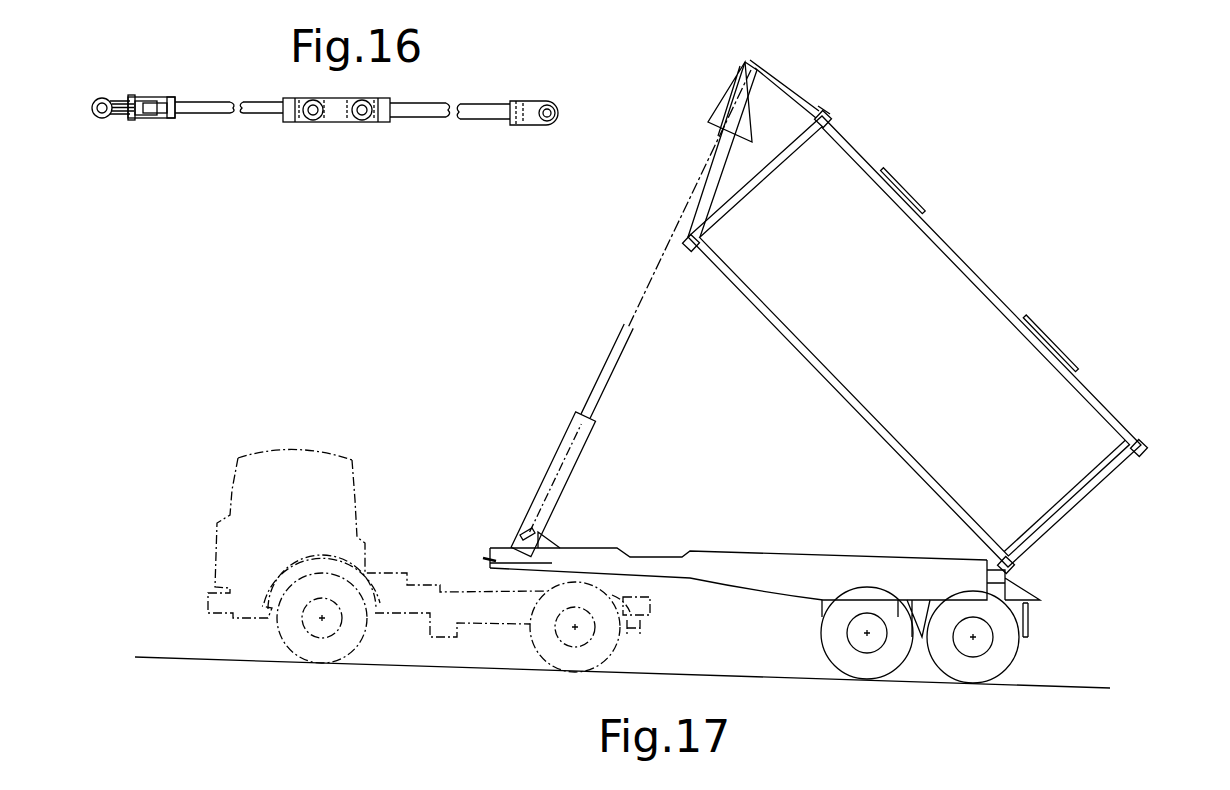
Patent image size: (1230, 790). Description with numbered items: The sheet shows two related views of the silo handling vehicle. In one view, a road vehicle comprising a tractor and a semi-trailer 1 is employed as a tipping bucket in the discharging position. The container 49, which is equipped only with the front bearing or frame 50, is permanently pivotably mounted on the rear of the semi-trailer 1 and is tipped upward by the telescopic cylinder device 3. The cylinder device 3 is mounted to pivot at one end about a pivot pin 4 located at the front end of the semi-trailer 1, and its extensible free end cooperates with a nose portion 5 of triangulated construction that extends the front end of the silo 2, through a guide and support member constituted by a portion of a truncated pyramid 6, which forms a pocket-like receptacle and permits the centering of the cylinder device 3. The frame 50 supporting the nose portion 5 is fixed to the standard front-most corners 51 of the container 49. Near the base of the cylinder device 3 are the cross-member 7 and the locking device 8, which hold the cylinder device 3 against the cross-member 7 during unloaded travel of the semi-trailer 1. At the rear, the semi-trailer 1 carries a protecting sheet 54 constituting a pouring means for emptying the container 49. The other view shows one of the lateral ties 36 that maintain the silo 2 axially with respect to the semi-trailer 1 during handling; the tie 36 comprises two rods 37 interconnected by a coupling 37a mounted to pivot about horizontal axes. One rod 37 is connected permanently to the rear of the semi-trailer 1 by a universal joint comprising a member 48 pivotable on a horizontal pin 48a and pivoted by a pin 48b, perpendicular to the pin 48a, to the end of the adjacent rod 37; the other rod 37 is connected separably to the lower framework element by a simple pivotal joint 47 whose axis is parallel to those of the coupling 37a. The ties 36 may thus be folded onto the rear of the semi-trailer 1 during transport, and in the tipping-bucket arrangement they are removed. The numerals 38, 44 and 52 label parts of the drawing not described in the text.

In FIG. 17, the semi-trailer 1 is at (765, 583).
In FIG. 17, the silo 2 is at (943, 278).
In FIG. 17, the telescopic cylinder device 3 is at (540, 497).
In FIG. 17, the pivot pin 4 is at (513, 552).
In FIG. 17, the nose portion 5 is at (755, 62).
In FIG. 17, the portion of a truncated pyramid 6 is at (748, 118).
In FIG. 17, the cross-member 7 is at (542, 538).
In FIG. 17, the locking device 8 is at (540, 528).
In FIG. 16, the lateral tie 36 is at (262, 88).
In FIG. 16, the rod 37 is at (262, 115).
In FIG. 16, the coupling 37a is at (338, 123).
In FIG. 17, the trailer body 38 is at (885, 565).
In FIG. 17, the guide rail 44 is at (906, 186).
In FIG. 16, the pivotal joint 47 is at (544, 122).
In FIG. 16, the member 48 is at (108, 99).
In FIG. 16, the horizontal pin 48a is at (108, 118).
In FIG. 16, the pin 48b is at (140, 125).
In FIG. 17, the container 49 is at (917, 250).
In FIG. 17, the frame 50 is at (822, 100).
In FIG. 17, the front-most corners 51 is at (832, 116).
In FIG. 17, the rear lock 52 is at (1142, 440).
In FIG. 17, the protecting sheet 54 is at (1017, 592).